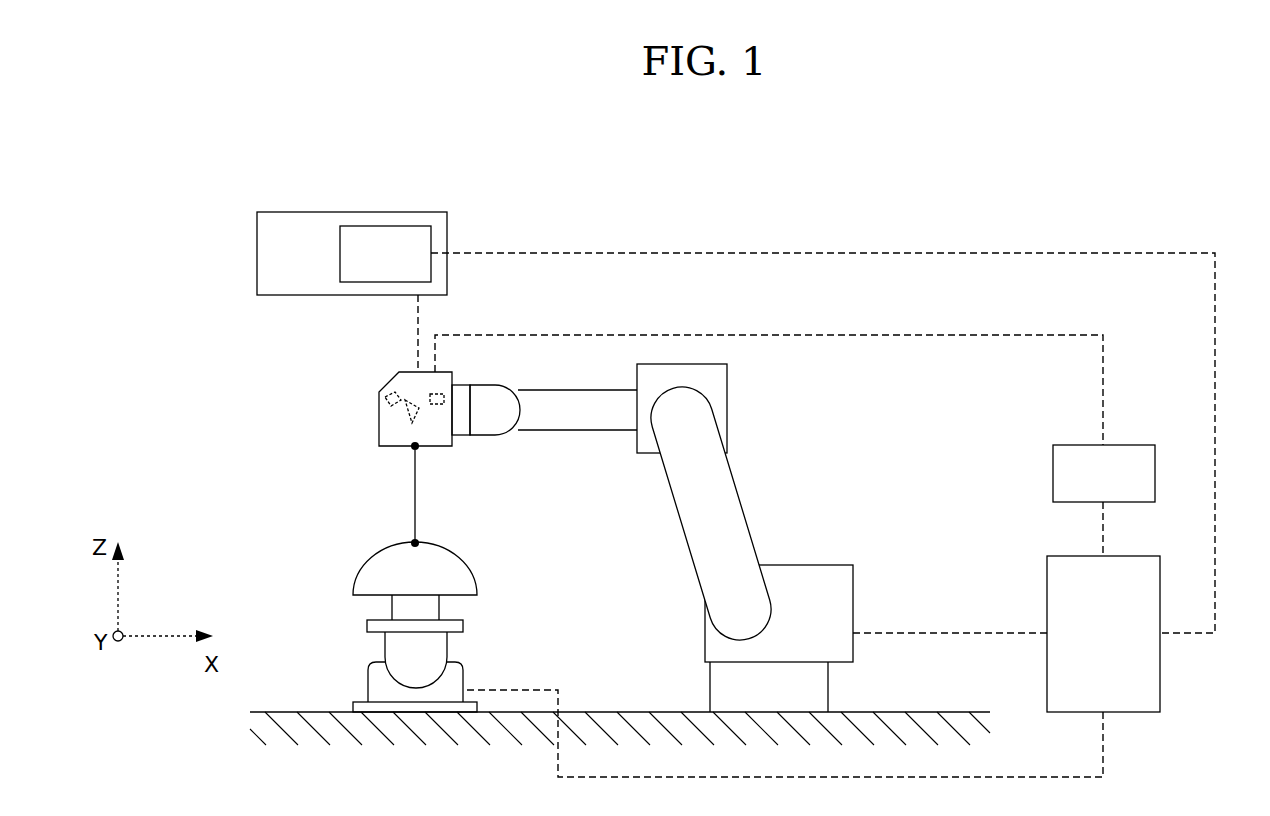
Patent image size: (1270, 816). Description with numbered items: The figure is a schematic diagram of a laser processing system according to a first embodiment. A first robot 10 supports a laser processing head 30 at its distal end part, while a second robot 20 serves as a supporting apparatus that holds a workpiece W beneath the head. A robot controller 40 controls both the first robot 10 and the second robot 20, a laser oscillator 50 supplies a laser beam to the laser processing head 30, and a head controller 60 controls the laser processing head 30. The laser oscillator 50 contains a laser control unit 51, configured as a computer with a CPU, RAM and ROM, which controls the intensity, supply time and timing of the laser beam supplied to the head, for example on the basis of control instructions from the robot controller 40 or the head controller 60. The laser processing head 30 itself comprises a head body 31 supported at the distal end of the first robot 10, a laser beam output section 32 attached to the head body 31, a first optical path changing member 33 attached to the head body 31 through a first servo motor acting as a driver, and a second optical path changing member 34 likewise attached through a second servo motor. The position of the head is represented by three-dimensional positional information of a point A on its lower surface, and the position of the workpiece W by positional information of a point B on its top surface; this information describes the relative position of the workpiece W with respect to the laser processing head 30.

The first robot 10 is at (740, 502).
The second robot 20 is at (370, 670).
The laser processing head 30 is at (411, 419).
The head body 31 is at (445, 447).
The laser beam output section 32 is at (452, 380).
The first optical path changing member 33 is at (385, 398).
The second optical path changing member 34 is at (401, 415).
The robot controller 40 is at (1160, 680).
The laser oscillator 50 is at (301, 212).
The laser control unit 51 is at (389, 226).
The head controller 60 is at (1053, 470).
The point A is at (412, 451).
The point B is at (410, 543).
The workpiece W is at (477, 568).